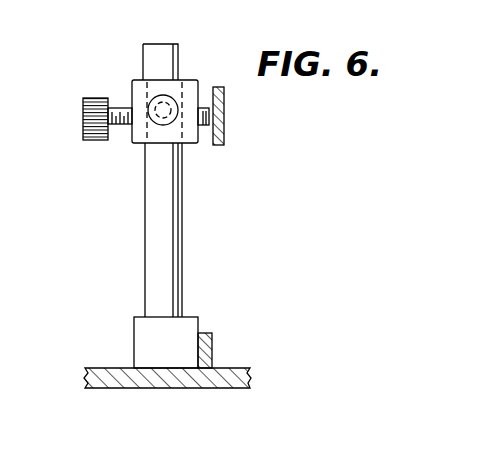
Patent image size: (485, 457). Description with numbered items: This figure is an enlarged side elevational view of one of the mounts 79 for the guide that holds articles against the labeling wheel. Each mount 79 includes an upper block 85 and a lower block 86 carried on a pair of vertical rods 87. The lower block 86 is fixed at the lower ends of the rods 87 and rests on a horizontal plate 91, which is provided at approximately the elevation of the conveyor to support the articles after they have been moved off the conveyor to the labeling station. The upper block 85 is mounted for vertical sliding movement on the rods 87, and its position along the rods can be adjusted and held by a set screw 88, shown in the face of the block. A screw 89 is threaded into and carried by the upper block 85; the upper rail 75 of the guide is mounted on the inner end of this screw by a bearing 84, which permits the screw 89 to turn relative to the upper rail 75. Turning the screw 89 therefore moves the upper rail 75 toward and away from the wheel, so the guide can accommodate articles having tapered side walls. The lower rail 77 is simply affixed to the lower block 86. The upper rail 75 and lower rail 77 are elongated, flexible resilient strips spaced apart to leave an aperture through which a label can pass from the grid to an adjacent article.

The upper rail 75 is at (225, 120).
The lower rail 77 is at (213, 348).
The mount 79 is at (126, 86).
The bearing 84 is at (213, 100).
The upper block 85 is at (152, 135).
The lower block 86 is at (143, 350).
The vertical rods 87 is at (167, 215).
The set screw 88 is at (166, 100).
The screw 89 is at (93, 107).
The horizontal plate 91 is at (163, 380).